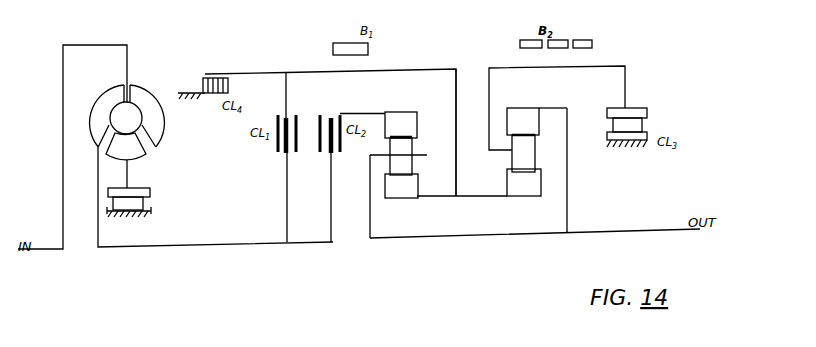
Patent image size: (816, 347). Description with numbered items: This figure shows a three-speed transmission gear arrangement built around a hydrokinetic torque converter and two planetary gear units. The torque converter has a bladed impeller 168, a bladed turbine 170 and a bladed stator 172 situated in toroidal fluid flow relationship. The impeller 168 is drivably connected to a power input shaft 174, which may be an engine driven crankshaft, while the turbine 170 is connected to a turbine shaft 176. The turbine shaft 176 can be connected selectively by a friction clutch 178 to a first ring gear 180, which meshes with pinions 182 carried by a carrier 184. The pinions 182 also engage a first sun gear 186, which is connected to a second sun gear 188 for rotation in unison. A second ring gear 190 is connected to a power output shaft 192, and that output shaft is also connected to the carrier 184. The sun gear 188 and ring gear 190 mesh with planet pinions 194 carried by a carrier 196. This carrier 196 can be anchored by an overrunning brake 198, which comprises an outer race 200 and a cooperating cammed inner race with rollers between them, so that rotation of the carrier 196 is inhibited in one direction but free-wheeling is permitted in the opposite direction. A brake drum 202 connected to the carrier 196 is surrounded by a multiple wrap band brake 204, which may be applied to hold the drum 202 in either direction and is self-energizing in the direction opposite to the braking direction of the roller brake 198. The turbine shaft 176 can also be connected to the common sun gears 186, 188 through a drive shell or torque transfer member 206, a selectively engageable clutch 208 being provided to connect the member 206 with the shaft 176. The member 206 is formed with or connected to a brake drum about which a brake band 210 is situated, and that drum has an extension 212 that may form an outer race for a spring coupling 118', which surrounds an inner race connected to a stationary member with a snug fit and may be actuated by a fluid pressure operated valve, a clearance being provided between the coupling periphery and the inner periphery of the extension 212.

The spring coupling 118' is at (224, 88).
The bladed impeller 168 is at (143, 98).
The bladed turbine 170 is at (103, 110).
The bladed stator 172 is at (135, 150).
The power input shaft 174 is at (52, 247).
The turbine shaft 176 is at (237, 225).
The friction clutch 178 is at (329, 146).
The first ring gear 180 is at (408, 117).
The pinions 182 is at (411, 145).
The carrier 184 is at (370, 172).
The first sun gear 186 is at (412, 197).
The second sun gear 188 is at (512, 197).
The second ring gear 190 is at (530, 108).
The power output shaft 192 is at (645, 203).
The planet pinions 194 is at (523, 140).
The carrier 196 is at (489, 88).
The overrunning brake 198 is at (645, 125).
The outer race 200 is at (640, 108).
The brake drum 202 is at (500, 67).
The multiple wrap brake 204 is at (585, 42).
The torque transfer member 206 is at (420, 68).
The clutch 208 is at (278, 152).
The brake band 210 is at (336, 51).
The extension 212 is at (262, 73).